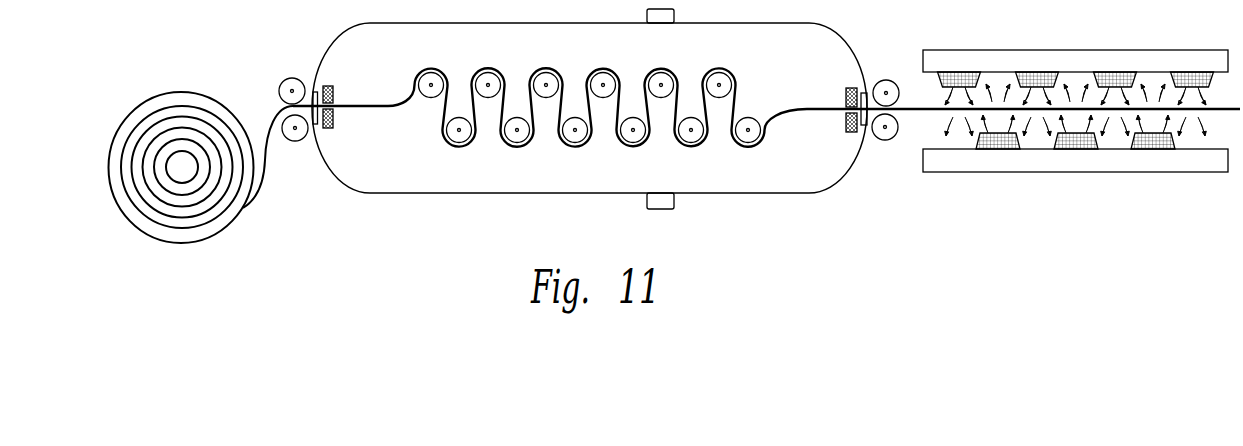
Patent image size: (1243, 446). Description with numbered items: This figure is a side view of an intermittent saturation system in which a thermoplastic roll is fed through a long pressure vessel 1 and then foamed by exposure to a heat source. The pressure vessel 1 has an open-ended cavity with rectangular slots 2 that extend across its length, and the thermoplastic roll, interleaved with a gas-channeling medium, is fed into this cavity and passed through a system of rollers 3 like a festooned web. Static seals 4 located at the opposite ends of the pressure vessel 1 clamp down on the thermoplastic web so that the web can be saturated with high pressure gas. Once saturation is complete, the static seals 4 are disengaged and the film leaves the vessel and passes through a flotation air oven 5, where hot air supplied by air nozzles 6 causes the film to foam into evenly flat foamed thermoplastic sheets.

The pressure vessel 1 is at (332, 45).
The rectangular slots 2 is at (316, 126).
The system of rollers 3 is at (577, 144).
The static seals 4 is at (333, 128).
The flotation air oven 5 is at (1003, 50).
The air nozzles 6 is at (1065, 150).